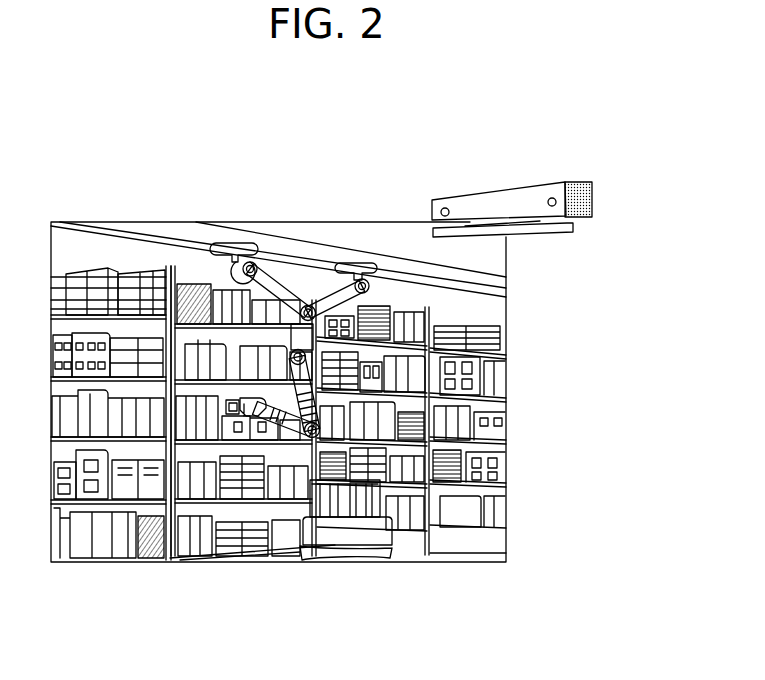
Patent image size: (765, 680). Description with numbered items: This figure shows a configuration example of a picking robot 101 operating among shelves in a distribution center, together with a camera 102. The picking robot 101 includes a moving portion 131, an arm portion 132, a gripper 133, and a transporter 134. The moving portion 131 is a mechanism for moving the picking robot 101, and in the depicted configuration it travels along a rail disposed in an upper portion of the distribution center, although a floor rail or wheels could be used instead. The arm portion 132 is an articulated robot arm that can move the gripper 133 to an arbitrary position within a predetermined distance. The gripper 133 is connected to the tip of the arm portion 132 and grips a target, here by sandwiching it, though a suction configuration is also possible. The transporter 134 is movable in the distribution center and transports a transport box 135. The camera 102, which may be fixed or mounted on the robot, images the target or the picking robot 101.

The picking robot 101 is at (319, 388).
The camera 102 is at (582, 182).
The moving portion 131 is at (357, 268).
The arm portion 132 is at (293, 424).
The gripper 133 is at (231, 412).
The transporter 134 is at (361, 542).
The transport box 135 is at (378, 506).